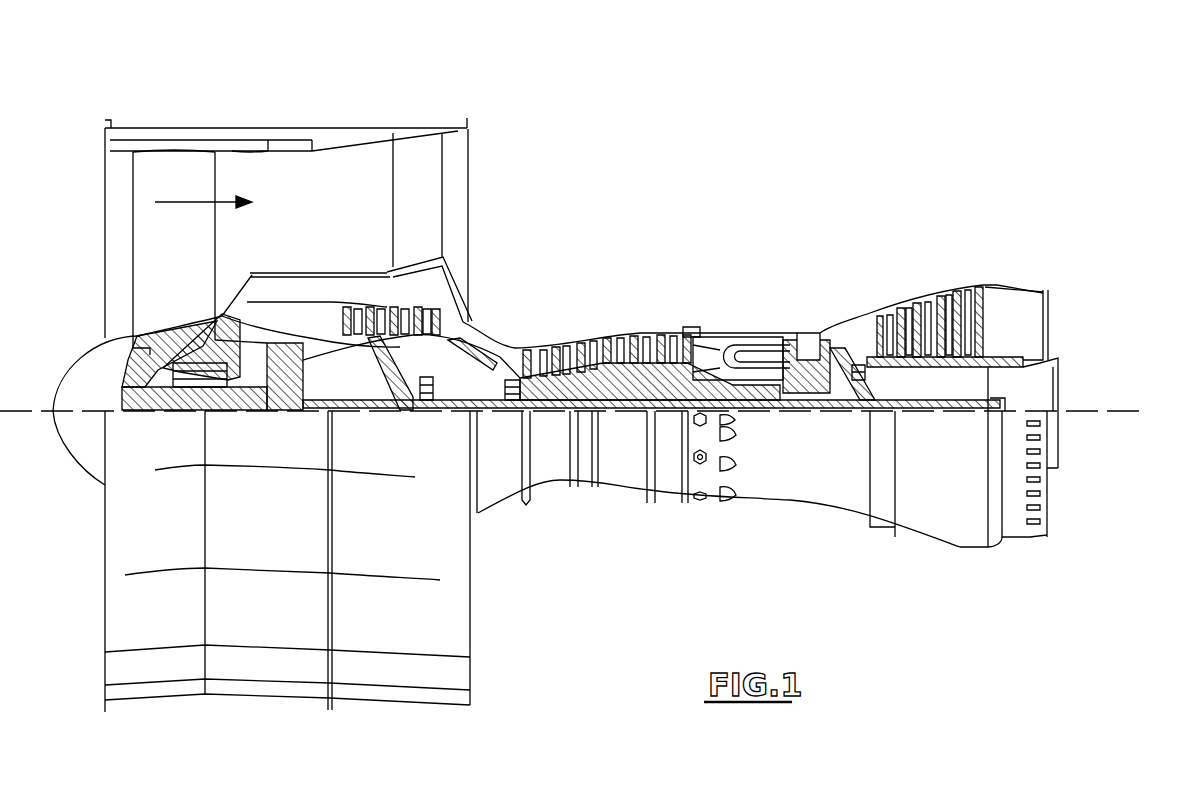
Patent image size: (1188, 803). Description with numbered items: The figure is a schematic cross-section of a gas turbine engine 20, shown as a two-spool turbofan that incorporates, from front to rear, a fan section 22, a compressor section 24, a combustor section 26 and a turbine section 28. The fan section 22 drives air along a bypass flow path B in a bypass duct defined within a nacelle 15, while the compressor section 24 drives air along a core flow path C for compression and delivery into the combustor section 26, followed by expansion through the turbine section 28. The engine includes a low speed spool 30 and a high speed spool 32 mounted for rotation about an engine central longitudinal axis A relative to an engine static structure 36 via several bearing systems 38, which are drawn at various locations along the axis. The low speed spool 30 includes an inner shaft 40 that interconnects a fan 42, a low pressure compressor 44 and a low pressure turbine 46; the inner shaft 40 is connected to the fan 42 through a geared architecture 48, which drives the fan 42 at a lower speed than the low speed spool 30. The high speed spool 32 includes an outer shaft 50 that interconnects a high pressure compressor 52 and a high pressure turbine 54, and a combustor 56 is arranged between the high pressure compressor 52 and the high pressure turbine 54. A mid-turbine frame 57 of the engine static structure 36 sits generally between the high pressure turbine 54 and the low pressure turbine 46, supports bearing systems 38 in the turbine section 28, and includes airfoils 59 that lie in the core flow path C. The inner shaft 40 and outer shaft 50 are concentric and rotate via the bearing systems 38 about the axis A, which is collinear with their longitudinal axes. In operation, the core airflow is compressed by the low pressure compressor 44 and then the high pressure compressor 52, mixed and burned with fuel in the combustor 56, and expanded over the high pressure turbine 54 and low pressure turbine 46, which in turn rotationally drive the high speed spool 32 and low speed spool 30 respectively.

The nacelle 15 is at (287, 135).
The gas turbine engine 20 is at (745, 180).
The fan section 22 is at (216, 122).
The compressor section 24 is at (517, 326).
The combustor section 26 is at (741, 309).
The turbine section 28 is at (887, 275).
The low speed spool 30 is at (625, 413).
The high speed spool 32 is at (668, 338).
The engine static structure 36 is at (667, 500).
The bearing systems 38 is at (424, 411).
The inner shaft 40 is at (488, 413).
The fan 42 is at (190, 258).
The low pressure compressor 44 is at (390, 306).
The low pressure turbine 46 is at (933, 300).
The geared architecture 48 is at (290, 411).
The outer shaft 50 is at (742, 410).
The high pressure compressor 52 is at (600, 350).
The high pressure turbine 54 is at (808, 333).
The combustor 56 is at (745, 350).
The mid-turbine frame 57 is at (848, 320).
The airfoils 59 is at (860, 370).
The engine central longitudinal axis A is at (1137, 411).
The bypass flow path B is at (192, 202).
The core flow path C is at (293, 312).